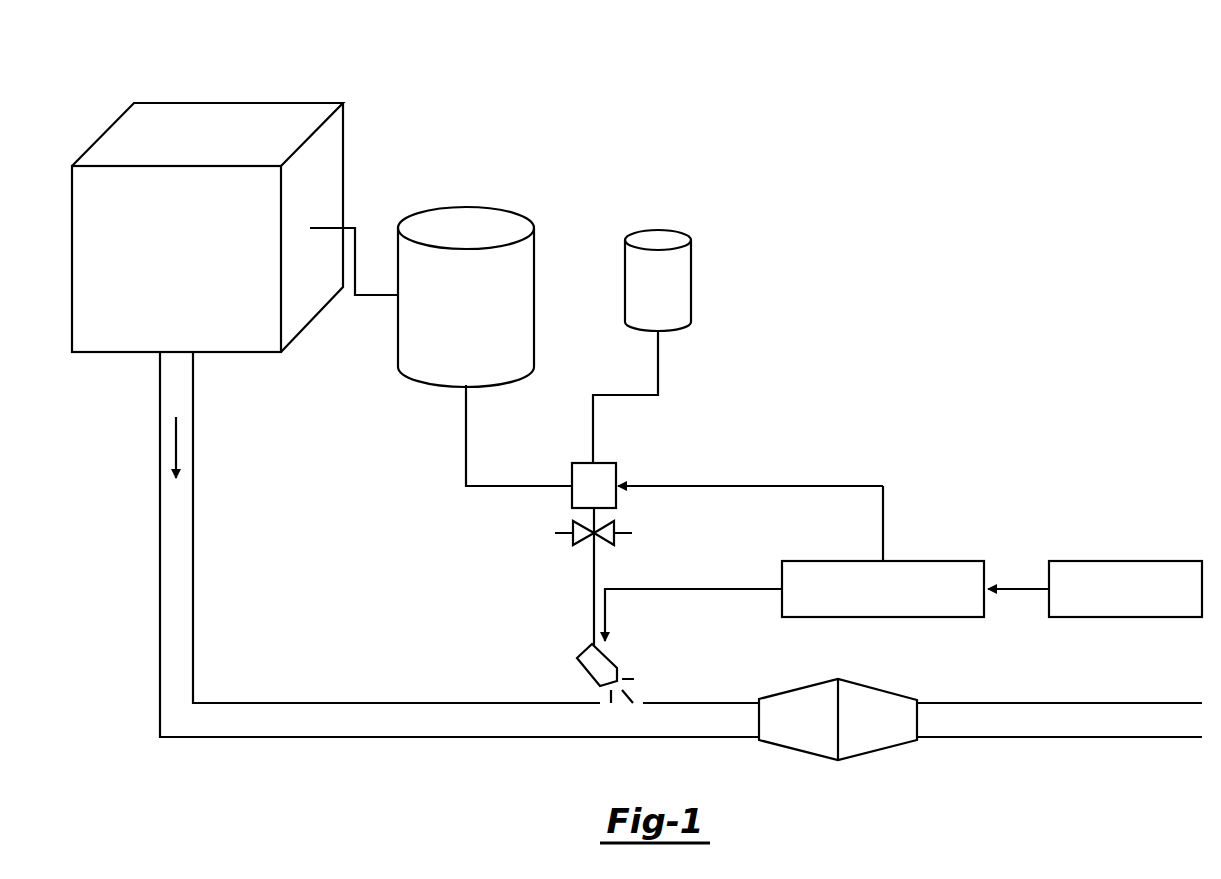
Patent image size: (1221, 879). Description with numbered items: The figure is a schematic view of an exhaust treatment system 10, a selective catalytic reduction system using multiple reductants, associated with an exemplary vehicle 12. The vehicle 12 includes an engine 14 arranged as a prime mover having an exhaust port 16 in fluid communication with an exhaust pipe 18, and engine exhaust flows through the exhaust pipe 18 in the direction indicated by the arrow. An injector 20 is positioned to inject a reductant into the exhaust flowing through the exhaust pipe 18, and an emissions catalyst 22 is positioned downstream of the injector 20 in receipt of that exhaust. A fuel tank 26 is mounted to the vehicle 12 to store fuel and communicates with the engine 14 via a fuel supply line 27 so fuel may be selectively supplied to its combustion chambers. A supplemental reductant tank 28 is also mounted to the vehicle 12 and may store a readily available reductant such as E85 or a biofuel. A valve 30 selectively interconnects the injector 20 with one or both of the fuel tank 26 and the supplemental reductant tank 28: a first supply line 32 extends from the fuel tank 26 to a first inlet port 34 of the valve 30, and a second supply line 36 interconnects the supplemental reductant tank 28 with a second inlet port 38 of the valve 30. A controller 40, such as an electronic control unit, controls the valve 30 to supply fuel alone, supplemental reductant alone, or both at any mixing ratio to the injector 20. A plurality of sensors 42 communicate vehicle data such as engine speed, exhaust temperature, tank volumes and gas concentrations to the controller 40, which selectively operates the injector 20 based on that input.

The exhaust treatment system 10 is at (765, 200).
The vehicle 12 is at (127, 88).
The engine 14 is at (242, 120).
The exhaust port 16 is at (238, 355).
The exhaust pipe 18 is at (194, 527).
The injector 20 is at (578, 676).
The emissions catalyst 22 is at (874, 688).
The fuel tank 26 is at (466, 222).
The fuel supply line 27 is at (366, 297).
The supplemental reductant tank 28 is at (658, 238).
The valve 30 is at (617, 497).
The first supply line 32 is at (466, 437).
The first inlet port 34 is at (572, 498).
The second supply line 36 is at (660, 362).
The second inlet port 38 is at (600, 461).
The controller 40 is at (936, 560).
The sensors 42 is at (1124, 560).